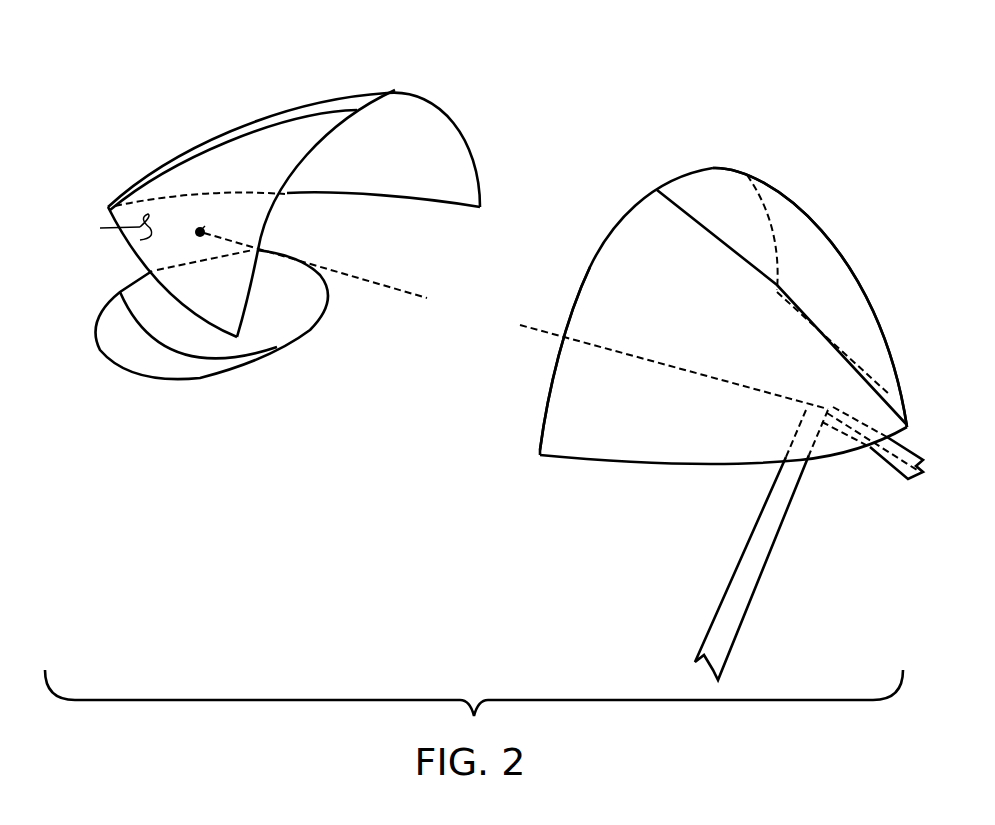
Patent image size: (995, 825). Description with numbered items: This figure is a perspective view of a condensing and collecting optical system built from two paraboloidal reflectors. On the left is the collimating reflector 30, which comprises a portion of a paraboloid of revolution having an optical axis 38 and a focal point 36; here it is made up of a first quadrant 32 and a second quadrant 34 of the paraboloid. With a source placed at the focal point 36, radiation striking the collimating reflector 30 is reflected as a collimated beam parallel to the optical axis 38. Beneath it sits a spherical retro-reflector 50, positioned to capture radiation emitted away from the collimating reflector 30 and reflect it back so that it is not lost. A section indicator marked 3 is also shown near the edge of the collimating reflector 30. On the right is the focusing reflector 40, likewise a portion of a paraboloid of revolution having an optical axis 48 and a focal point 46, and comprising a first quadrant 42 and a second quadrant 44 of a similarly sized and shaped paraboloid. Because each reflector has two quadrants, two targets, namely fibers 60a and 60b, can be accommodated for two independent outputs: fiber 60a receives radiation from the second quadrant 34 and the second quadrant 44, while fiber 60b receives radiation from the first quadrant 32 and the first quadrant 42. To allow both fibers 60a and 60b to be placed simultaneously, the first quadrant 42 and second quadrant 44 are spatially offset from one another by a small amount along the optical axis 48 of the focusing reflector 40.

The collimating reflector 30 is at (400, 78).
The first quadrant 32 is at (267, 220).
The second quadrant 34 is at (470, 137).
The focal point 36 is at (201, 210).
The optical axis 38 is at (393, 284).
The section line for FIG. 3 is at (117, 230).
The retro-reflector 50 is at (170, 398).
The focusing reflector 40 is at (697, 168).
The first quadrant 42 is at (585, 397).
The second quadrant 44 is at (800, 220).
The focal point 46 is at (825, 404).
The optical axis 48 is at (717, 378).
The fiber 60a is at (780, 538).
The fiber 60b is at (880, 468).